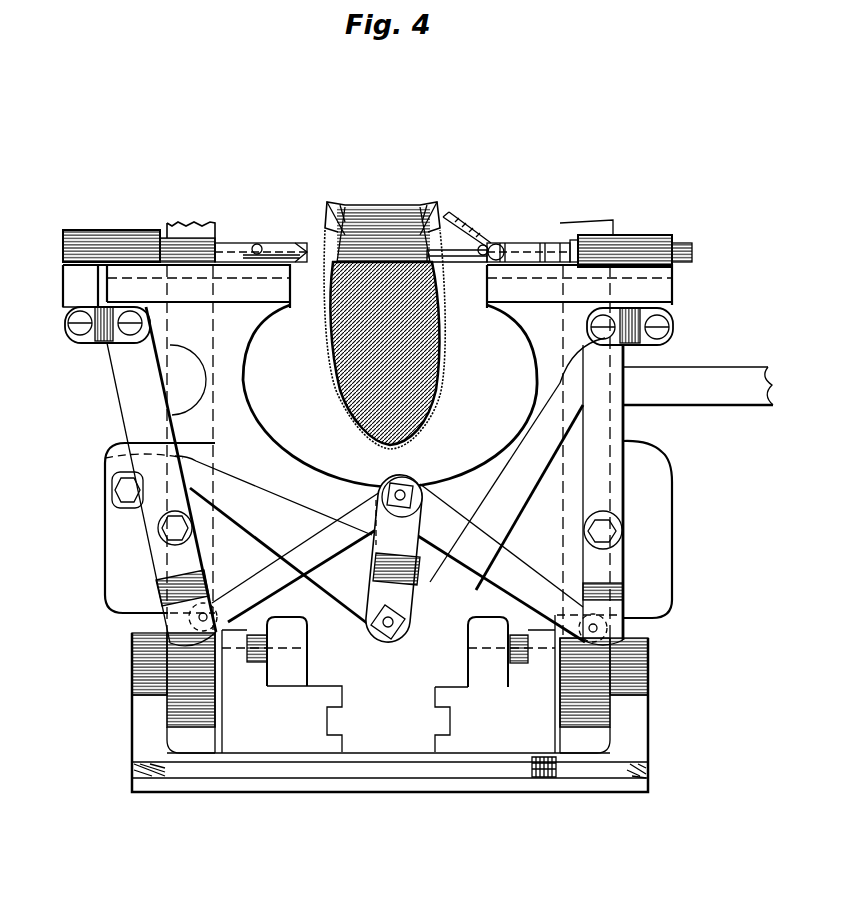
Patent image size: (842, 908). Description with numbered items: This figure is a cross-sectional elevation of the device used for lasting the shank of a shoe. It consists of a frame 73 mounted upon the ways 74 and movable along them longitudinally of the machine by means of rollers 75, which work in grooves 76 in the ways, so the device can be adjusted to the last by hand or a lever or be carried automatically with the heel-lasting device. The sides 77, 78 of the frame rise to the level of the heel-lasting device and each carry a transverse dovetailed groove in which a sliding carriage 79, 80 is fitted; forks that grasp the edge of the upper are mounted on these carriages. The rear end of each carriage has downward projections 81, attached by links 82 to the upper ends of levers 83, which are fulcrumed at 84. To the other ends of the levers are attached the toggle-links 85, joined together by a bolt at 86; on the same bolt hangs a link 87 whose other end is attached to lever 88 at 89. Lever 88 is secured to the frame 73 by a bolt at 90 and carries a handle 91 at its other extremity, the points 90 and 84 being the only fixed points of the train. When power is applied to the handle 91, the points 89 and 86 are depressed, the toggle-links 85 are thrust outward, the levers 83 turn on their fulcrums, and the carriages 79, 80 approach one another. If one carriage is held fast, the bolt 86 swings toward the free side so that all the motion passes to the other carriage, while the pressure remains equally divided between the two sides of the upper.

The frame 73 is at (367, 452).
The ways 74 is at (390, 693).
The rollers 75 is at (387, 652).
The grooves 76 is at (390, 647).
The side of frame 77 is at (665, 278).
The side of frame 78 is at (92, 278).
The sliding carriage 79 is at (690, 260).
The sliding carriage 80 is at (68, 250).
The downward projections 81 is at (675, 320).
The links 82 is at (642, 345).
The levers 83 is at (614, 432).
The fulcrums 84 is at (616, 530).
The toggle-links 85 is at (398, 563).
The bolt joining toggle-links 86 is at (405, 492).
The link 87 is at (394, 558).
The lever 88 is at (397, 482).
The attachment point of link 87 to lever 88 89 is at (388, 635).
The bolt securing lever 88 90 is at (115, 495).
The handle 91 is at (698, 386).